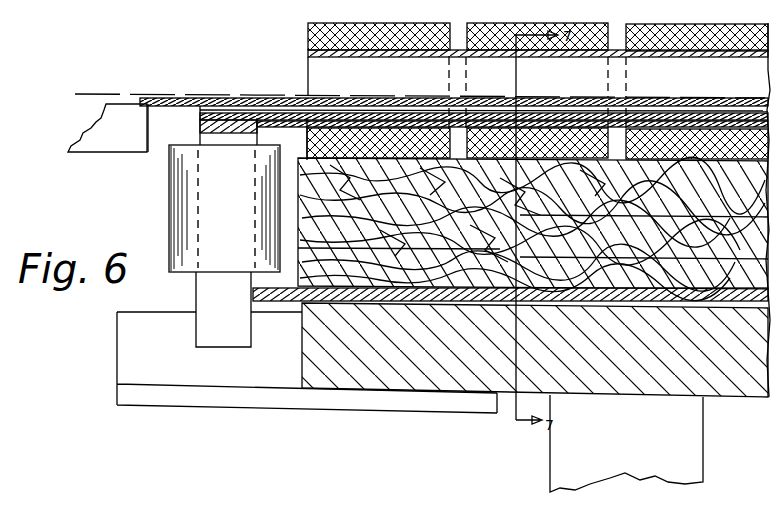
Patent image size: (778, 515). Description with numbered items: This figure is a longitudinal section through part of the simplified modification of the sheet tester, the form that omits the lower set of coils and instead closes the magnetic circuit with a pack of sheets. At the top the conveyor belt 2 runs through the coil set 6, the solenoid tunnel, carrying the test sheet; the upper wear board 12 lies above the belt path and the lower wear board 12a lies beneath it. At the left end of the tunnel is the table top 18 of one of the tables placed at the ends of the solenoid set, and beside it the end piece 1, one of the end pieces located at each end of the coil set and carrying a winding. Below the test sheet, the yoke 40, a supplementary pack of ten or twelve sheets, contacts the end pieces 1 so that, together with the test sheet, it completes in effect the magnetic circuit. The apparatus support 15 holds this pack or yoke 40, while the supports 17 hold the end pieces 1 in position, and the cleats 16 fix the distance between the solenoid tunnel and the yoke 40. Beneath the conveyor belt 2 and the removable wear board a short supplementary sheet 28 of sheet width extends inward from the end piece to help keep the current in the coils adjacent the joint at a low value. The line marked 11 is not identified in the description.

The end piece 1 is at (204, 335).
The conveyor belt 2 is at (183, 99).
The coil set 6 is at (306, 52).
The reference plane 11 is at (140, 97).
The upper wear board 12 is at (298, 62).
The lower wear board 12a is at (668, 132).
The apparatus support 15 is at (280, 456).
The cleat 16 is at (646, 192).
The support 17 is at (130, 355).
The table top 18 is at (84, 128).
The supplementary sheet 28 is at (168, 134).
The yoke 40 is at (274, 302).